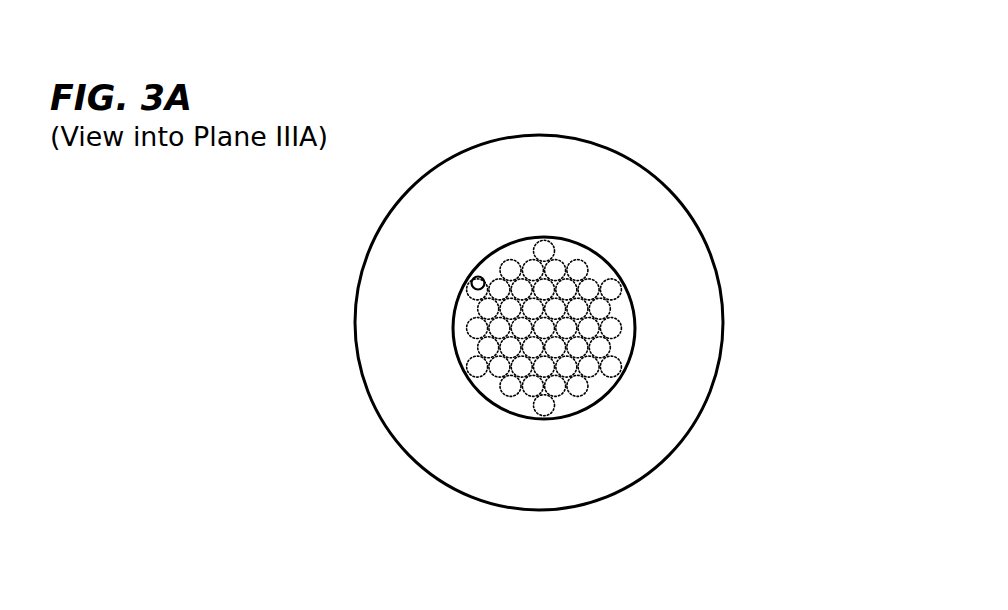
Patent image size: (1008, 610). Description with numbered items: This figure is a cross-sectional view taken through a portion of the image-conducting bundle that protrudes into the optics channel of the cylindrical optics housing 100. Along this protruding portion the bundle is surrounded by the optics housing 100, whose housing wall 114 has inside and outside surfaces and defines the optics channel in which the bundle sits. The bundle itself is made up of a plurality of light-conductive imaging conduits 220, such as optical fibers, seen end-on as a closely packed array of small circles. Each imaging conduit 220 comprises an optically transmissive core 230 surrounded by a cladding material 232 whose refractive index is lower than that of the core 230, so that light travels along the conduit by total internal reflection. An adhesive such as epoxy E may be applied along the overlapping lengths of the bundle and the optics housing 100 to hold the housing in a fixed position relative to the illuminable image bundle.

The optics housing 100 is at (412, 418).
The housing wall 114 is at (378, 365).
The light-conductive imaging conduits 220 is at (502, 262).
The cladding material 232 is at (492, 262).
The optically transmissive core 230 is at (471, 283).
The epoxy E is at (614, 251).